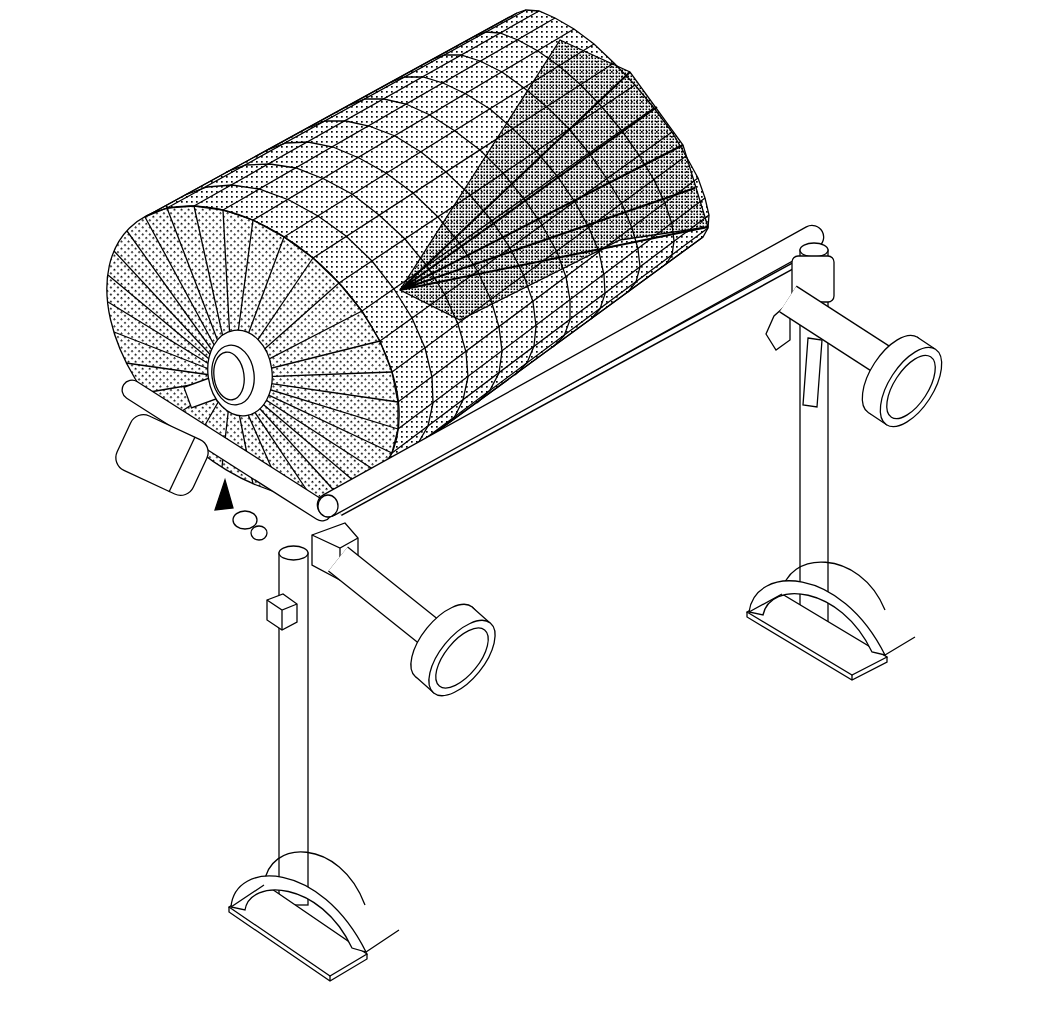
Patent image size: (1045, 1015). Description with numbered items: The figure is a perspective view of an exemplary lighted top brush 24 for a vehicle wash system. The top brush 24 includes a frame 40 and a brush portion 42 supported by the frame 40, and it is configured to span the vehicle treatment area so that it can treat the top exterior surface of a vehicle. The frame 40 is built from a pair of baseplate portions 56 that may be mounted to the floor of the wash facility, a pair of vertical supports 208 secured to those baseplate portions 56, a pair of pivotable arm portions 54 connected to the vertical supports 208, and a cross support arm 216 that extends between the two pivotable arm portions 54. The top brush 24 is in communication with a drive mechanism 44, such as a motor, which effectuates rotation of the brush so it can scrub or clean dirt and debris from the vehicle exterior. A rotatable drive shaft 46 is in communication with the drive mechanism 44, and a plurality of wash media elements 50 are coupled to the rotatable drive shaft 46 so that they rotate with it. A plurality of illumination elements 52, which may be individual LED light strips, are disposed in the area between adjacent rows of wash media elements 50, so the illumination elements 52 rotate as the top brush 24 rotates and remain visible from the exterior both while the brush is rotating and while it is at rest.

The top brush 24 is at (153, 92).
The frame 40 is at (766, 226).
The brush portion 42 is at (320, 88).
The drive mechanism 44 is at (135, 452).
The rotatable drive shaft 46 is at (208, 385).
The wash media elements 50 is at (630, 50).
The illumination elements 52 is at (620, 158).
The pivotable arm portions 54 is at (408, 600).
The baseplate portions 56 is at (357, 947).
The vertical supports 208 is at (818, 492).
The cross support arm 216 is at (567, 367).